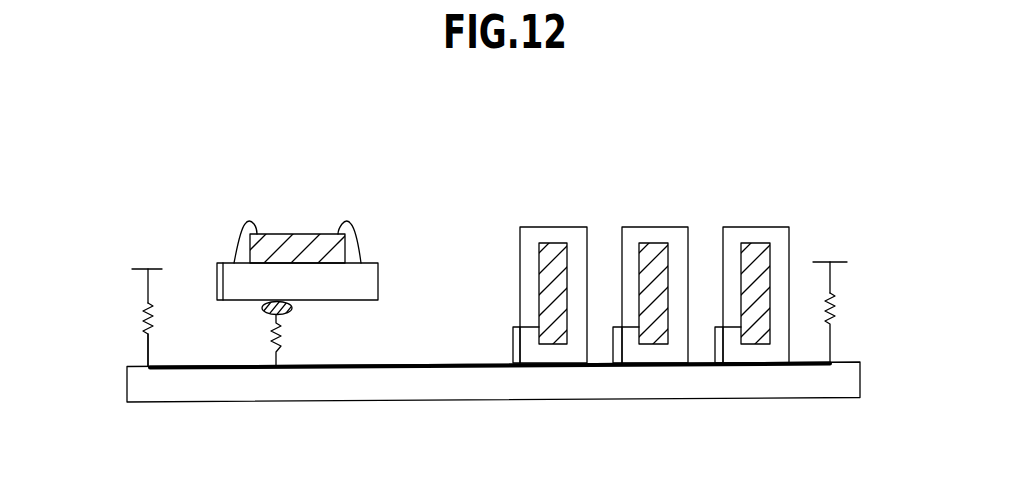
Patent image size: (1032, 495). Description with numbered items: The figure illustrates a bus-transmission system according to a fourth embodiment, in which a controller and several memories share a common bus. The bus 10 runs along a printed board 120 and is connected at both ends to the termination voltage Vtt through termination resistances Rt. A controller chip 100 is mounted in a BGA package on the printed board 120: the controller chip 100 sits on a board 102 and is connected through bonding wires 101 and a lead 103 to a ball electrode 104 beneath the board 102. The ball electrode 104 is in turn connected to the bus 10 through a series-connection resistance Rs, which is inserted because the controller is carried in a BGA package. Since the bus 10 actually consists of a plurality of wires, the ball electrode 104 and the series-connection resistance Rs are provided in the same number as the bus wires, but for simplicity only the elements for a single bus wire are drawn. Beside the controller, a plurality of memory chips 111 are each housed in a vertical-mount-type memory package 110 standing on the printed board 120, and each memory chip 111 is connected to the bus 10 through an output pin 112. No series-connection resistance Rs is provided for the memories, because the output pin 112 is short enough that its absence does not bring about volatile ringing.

The controller chip 100 is at (273, 233).
The bonding wires 101 is at (360, 240).
The board 102 is at (338, 300).
The lead 103 is at (218, 275).
The ball electrode 104 is at (288, 307).
The bus 10 is at (170, 365).
The memory package 110 is at (570, 227).
The memory chip 111 is at (543, 233).
The output pin 112 is at (513, 327).
The printed board 120 is at (527, 392).
The termination resistance Rt is at (863, 300).
The series-connection resistance Rs is at (270, 343).
The termination voltage Vtt is at (488, 266).